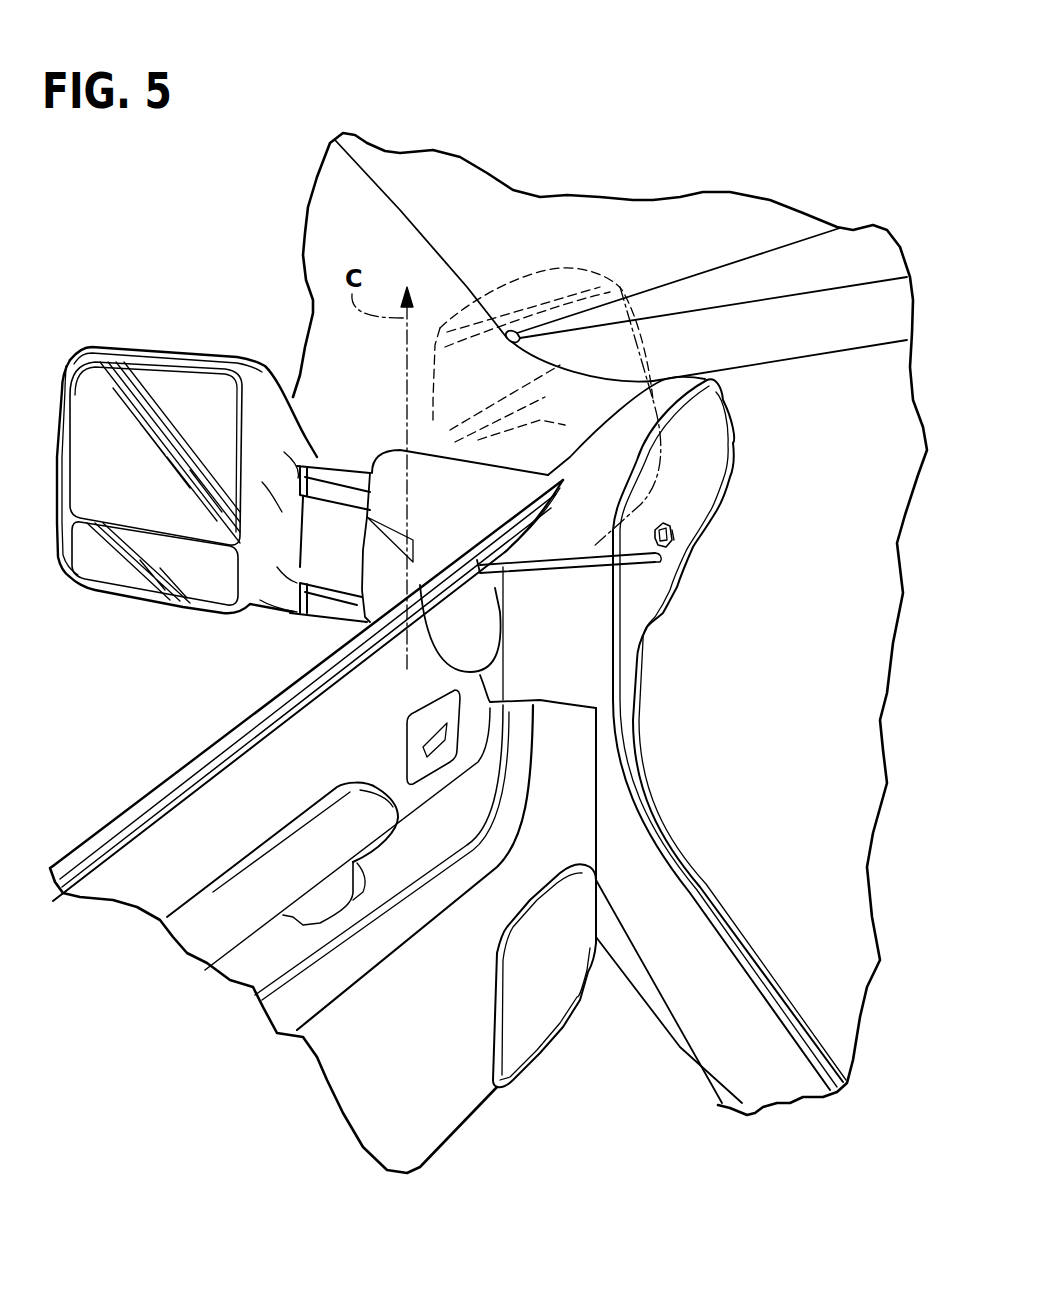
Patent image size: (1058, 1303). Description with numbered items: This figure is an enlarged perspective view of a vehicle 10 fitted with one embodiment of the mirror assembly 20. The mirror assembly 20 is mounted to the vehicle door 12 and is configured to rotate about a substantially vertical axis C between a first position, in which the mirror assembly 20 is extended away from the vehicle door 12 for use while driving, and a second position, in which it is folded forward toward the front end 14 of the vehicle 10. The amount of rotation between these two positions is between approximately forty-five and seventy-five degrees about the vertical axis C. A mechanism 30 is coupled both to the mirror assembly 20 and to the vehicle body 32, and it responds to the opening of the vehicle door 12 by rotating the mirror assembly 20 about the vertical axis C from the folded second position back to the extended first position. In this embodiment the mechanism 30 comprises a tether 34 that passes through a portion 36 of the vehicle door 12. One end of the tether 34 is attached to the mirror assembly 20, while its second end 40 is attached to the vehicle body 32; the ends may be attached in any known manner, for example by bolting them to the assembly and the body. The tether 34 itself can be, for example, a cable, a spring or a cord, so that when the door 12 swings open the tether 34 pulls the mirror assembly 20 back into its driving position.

The vehicle 10 is at (697, 121).
The vehicle door 12 is at (187, 862).
The front end 14 is at (337, 190).
The mirror assembly 20 is at (197, 330).
The mechanism 30 is at (524, 574).
The vehicle body 32 is at (708, 478).
The tether 34 is at (562, 567).
The portion of the vehicle door 36 is at (458, 667).
The second end 40 is at (673, 536).